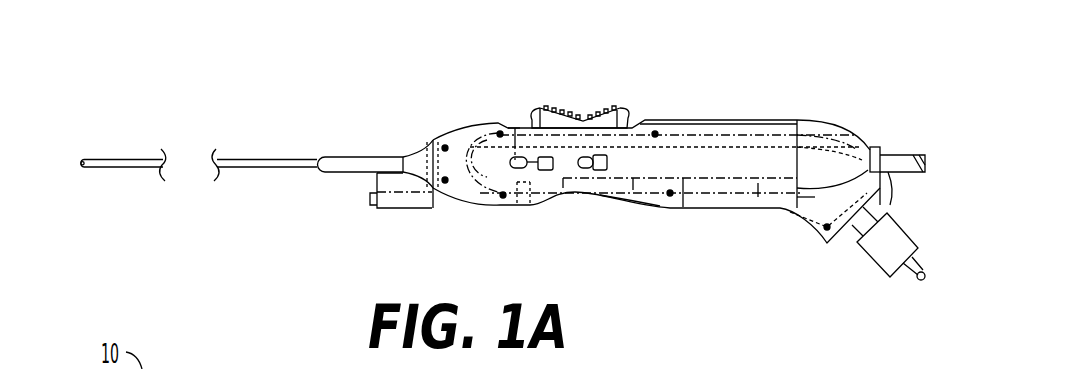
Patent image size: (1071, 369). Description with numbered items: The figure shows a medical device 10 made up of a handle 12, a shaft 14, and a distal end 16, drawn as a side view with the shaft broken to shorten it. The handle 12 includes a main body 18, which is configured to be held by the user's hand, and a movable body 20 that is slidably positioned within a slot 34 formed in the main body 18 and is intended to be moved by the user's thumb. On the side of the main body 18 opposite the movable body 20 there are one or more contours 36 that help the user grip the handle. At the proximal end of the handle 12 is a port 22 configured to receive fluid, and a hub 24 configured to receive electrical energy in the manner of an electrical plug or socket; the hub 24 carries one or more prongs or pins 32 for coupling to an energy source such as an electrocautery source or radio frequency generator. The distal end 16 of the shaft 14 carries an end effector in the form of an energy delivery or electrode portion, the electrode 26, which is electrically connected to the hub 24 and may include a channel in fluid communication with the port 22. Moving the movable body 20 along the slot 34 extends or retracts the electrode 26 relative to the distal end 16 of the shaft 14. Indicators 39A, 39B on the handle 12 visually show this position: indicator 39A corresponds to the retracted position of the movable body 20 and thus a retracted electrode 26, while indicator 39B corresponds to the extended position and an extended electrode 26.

The medical device 10 is at (133, 89).
The handle 12 is at (740, 89).
The shaft 14 is at (251, 157).
The distal end 16 is at (126, 179).
The main body 18 is at (768, 121).
The movable body 20 is at (519, 137).
The port 22 is at (898, 154).
The hub 24 is at (908, 228).
The electrode 26 is at (80, 174).
The pin 32 is at (912, 280).
The slot 34 is at (514, 119).
The contour 36 is at (628, 204).
The indicator 39A is at (606, 146).
The indicator 39B is at (540, 171).